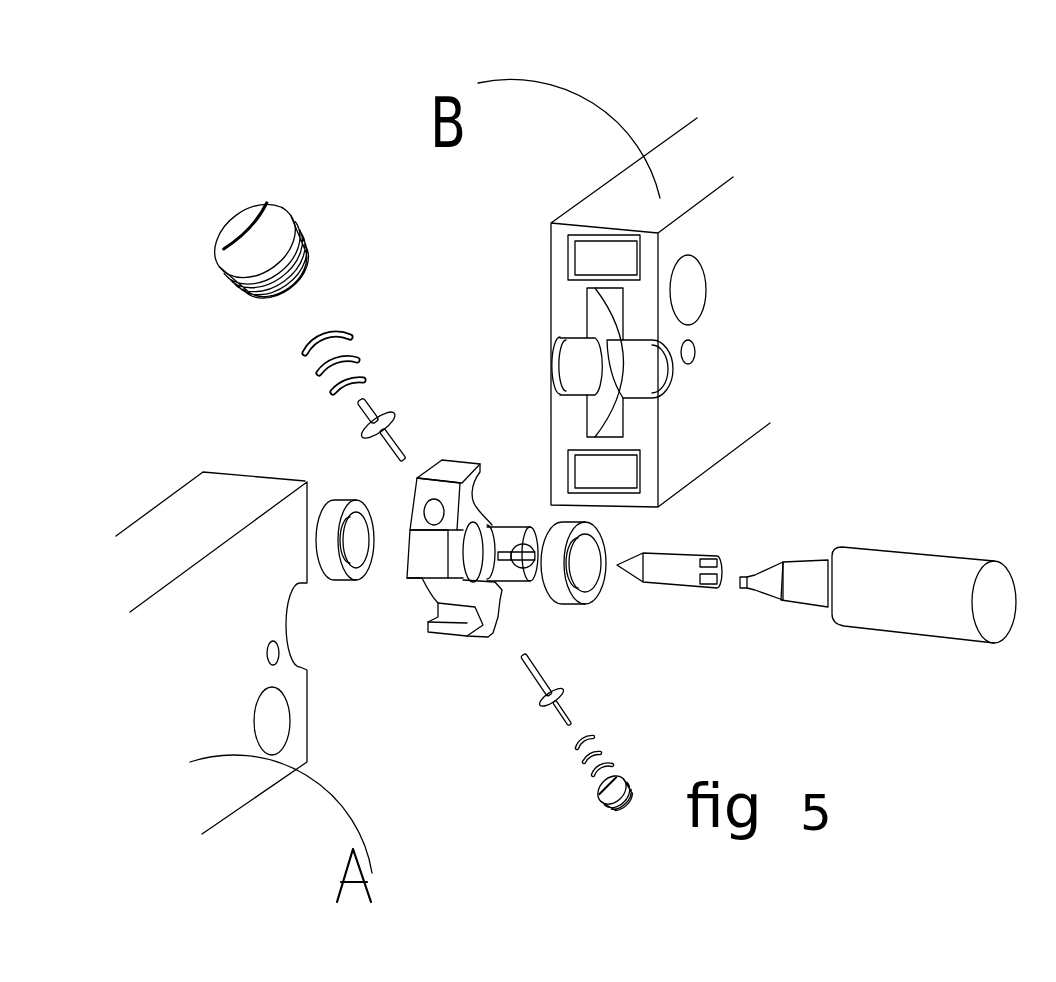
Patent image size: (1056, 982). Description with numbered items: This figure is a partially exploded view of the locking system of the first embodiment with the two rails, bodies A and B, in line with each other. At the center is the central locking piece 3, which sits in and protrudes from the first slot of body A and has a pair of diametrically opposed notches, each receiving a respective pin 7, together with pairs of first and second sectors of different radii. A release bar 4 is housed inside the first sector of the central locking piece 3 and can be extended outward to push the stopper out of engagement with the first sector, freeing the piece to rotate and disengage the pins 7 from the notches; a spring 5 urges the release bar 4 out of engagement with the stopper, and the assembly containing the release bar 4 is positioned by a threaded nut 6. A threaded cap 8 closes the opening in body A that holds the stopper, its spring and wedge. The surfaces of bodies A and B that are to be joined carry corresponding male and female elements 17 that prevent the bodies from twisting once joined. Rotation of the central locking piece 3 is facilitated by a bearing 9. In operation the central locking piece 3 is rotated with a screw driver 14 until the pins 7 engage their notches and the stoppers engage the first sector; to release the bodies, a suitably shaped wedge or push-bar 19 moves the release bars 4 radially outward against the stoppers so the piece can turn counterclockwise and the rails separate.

The central locking piece 3 is at (490, 492).
The release bar 4 is at (393, 410).
The spring 5 is at (300, 383).
The threaded nut 6 is at (292, 212).
The first pin 7 is at (279, 649).
The threaded cap 8 is at (688, 290).
The bearing 9 is at (567, 603).
The screw driver 14 is at (922, 572).
The male and female elements 17 is at (610, 258).
The wedge or push-bar 19 is at (678, 573).